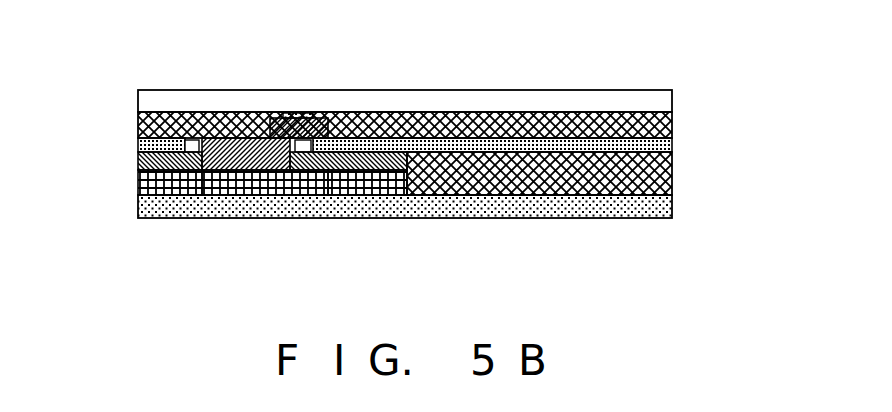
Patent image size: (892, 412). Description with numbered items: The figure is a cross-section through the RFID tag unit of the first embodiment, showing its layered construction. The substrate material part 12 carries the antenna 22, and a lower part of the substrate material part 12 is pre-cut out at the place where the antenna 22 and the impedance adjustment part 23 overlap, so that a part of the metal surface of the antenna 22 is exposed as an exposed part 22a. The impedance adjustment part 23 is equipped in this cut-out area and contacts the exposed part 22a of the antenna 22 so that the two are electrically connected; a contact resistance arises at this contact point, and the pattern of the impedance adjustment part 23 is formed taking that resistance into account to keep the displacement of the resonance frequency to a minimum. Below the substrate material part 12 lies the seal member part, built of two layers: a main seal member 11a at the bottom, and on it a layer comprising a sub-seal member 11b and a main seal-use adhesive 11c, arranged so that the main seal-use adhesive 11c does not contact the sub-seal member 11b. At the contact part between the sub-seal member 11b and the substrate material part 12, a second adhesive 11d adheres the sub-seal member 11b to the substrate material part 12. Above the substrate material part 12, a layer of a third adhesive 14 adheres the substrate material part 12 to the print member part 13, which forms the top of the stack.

The print member part 13 is at (607, 90).
The third adhesive 14 is at (673, 118).
The substrate material part 12 is at (138, 146).
The main seal-use adhesive 11c is at (673, 170).
The sub-seal member 11b is at (240, 188).
The main seal member 11a is at (403, 218).
The second adhesive 11d is at (165, 192).
The antenna 22 is at (305, 112).
The exposed part 22a is at (270, 114).
The impedance adjustment part 23 is at (209, 124).